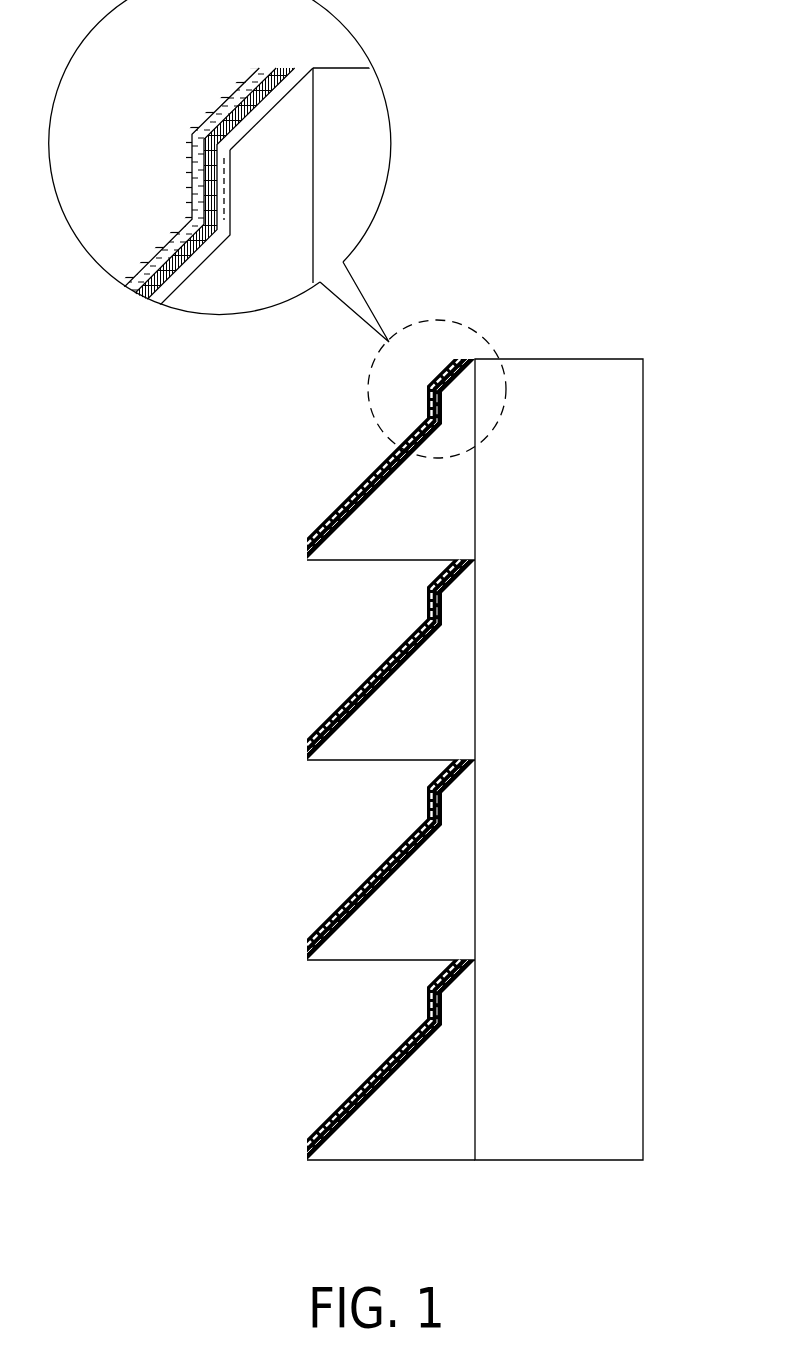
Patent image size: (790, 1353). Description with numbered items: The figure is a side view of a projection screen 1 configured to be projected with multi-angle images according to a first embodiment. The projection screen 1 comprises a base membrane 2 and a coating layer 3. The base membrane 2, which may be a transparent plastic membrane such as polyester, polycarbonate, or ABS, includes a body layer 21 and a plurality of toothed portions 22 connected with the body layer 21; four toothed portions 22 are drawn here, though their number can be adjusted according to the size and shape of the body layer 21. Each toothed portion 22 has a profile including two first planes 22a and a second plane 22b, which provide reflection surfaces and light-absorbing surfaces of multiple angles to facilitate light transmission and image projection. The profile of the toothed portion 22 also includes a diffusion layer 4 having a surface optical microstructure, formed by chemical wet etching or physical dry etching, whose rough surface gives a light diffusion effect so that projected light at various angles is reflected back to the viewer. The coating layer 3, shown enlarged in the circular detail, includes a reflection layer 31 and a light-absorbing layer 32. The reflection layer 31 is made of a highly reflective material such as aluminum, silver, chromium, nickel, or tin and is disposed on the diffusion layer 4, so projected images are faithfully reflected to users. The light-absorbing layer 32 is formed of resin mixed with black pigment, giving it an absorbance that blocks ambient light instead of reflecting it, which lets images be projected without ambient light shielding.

The projection screen 1 is at (698, 60).
The base membrane 2 is at (420, 1217).
The body layer 21 is at (520, 1143).
The toothed portion 22 is at (443, 1143).
The first plane 22a is at (268, 113).
The second plane 22b is at (229, 198).
The coating layer 3 is at (165, 28).
The reflection layer 31 is at (258, 74).
The light-absorbing layer 32 is at (227, 103).
The diffusion layer 4 is at (303, 66).